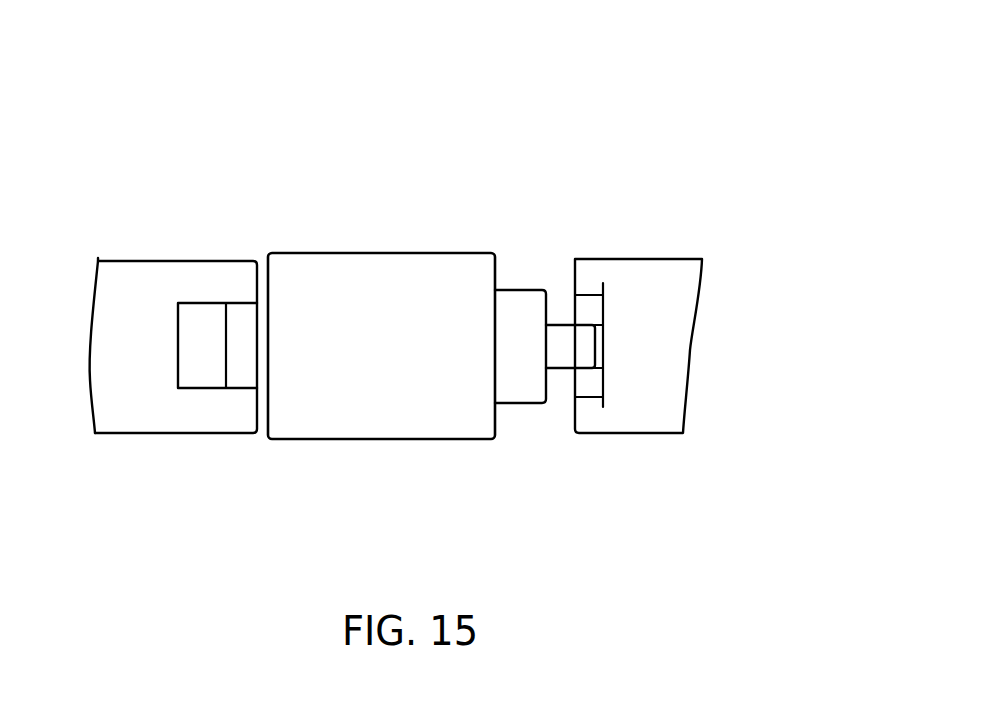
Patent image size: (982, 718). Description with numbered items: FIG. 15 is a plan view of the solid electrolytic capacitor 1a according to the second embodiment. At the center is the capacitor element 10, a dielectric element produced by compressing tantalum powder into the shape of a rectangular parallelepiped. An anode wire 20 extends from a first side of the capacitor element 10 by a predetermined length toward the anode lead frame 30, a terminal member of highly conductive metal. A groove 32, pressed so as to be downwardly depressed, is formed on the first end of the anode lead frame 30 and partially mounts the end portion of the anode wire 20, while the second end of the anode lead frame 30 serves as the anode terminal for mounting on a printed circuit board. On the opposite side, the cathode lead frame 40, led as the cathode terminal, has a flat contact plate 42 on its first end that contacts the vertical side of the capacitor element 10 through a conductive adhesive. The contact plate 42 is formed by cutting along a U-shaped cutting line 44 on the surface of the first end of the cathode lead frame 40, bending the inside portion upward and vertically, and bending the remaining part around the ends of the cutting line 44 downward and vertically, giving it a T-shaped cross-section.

The solid electrolytic capacitor 1a is at (688, 198).
The capacitor element 10 is at (418, 418).
The anode wire 20 is at (555, 358).
The anode lead frame 30 is at (653, 407).
The groove 32 is at (584, 325).
The cathode lead frame 40 is at (129, 412).
The contact plate 42 is at (238, 377).
The cutting line 44 is at (200, 303).